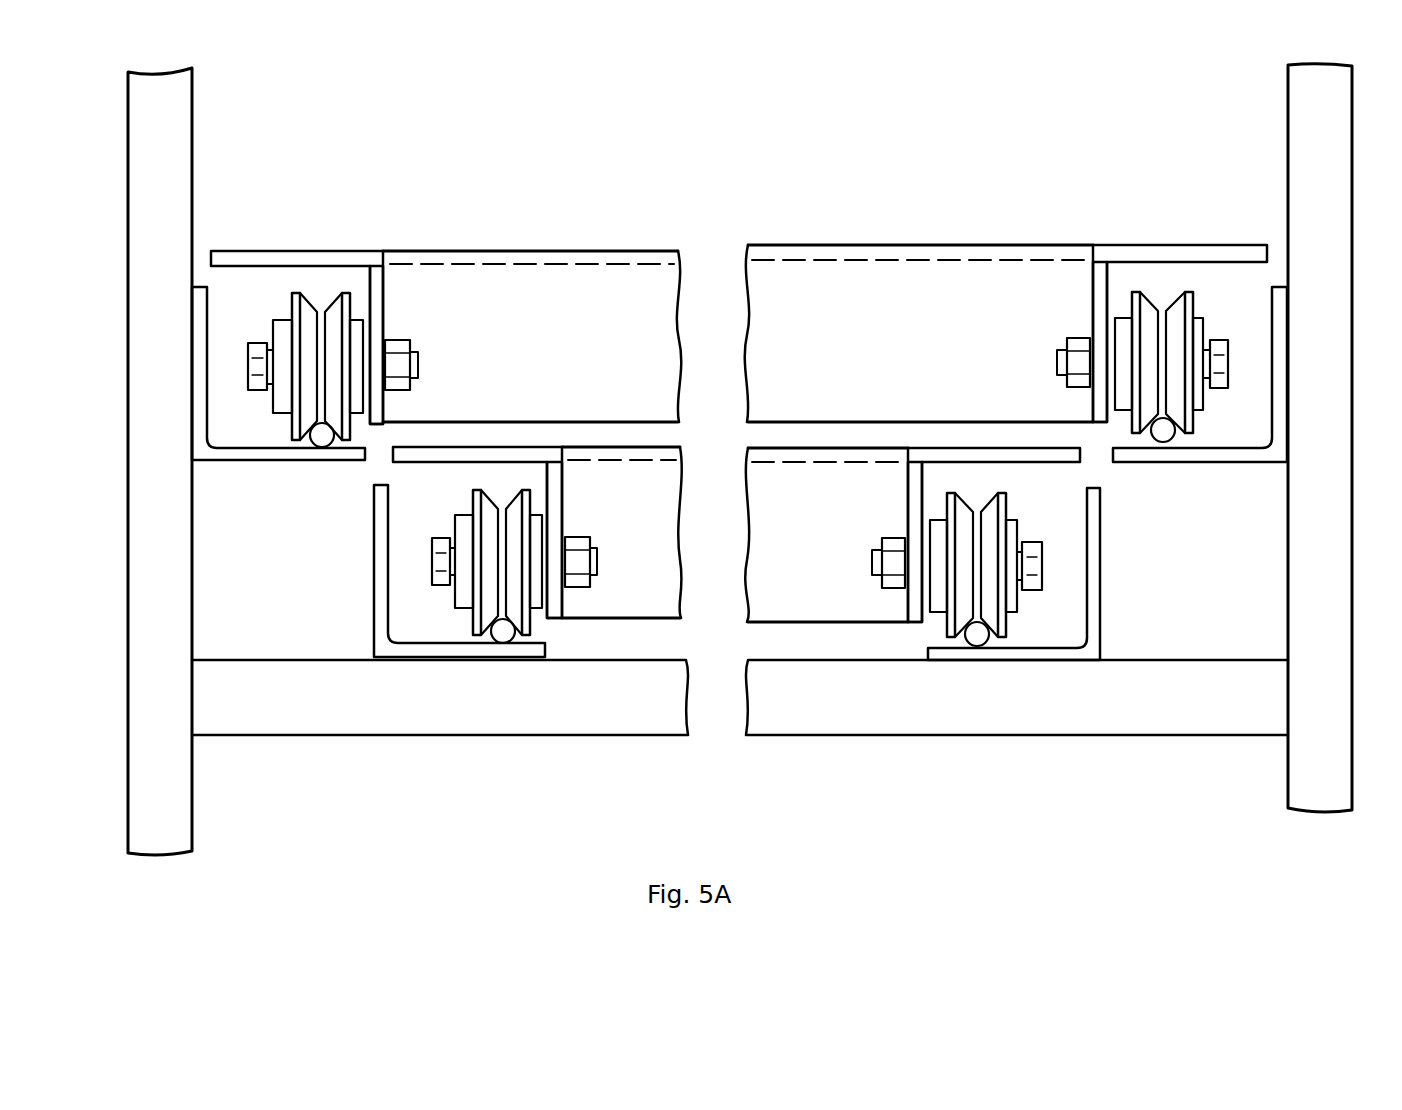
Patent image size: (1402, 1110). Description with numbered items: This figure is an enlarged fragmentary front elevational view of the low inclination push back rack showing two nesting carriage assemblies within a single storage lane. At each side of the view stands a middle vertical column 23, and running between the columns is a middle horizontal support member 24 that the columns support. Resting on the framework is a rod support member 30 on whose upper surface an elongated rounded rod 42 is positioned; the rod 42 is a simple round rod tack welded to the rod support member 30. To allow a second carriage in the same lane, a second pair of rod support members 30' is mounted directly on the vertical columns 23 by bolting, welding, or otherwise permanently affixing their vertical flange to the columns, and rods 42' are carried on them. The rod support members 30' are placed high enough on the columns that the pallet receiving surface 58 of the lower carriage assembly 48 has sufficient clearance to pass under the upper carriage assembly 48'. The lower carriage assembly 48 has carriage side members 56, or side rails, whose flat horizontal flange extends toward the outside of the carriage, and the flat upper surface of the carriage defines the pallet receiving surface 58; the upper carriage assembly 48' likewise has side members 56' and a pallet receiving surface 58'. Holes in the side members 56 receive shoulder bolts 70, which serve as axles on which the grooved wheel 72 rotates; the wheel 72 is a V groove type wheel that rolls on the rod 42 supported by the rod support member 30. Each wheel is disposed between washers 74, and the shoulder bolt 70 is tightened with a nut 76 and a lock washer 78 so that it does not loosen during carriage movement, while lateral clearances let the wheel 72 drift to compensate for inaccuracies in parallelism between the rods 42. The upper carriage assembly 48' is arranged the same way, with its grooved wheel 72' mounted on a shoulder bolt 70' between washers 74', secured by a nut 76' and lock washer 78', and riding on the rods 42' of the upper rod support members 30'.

The middle vertical columns 23 is at (172, 812).
The middle horizontal support members 24 is at (665, 712).
The rod support members 30 is at (748, 632).
The second pair of rod support members 30' is at (746, 363).
The elongated rounded rods 42 is at (712, 699).
The rods 42' is at (734, 467).
The lower carriage assembly 48 is at (748, 738).
The upper carriage assembly 48' is at (612, 143).
The carriage side members 56 is at (736, 491).
The carriage side members 56' is at (739, 291).
The pallet receiving surface 58 is at (735, 473).
The pallet receiving surface 58' is at (738, 270).
The shoulder bolts 70 is at (676, 569).
The shoulder bolts 70' is at (743, 331).
The grooved wheel 72 is at (687, 662).
The grooved wheel 72' is at (732, 442).
The washers 74 is at (625, 638).
The washers 74' is at (737, 360).
The nut 76 is at (703, 700).
The nut 76' is at (738, 349).
The lock washer 78 is at (770, 644).
The lock washer 78' is at (737, 343).